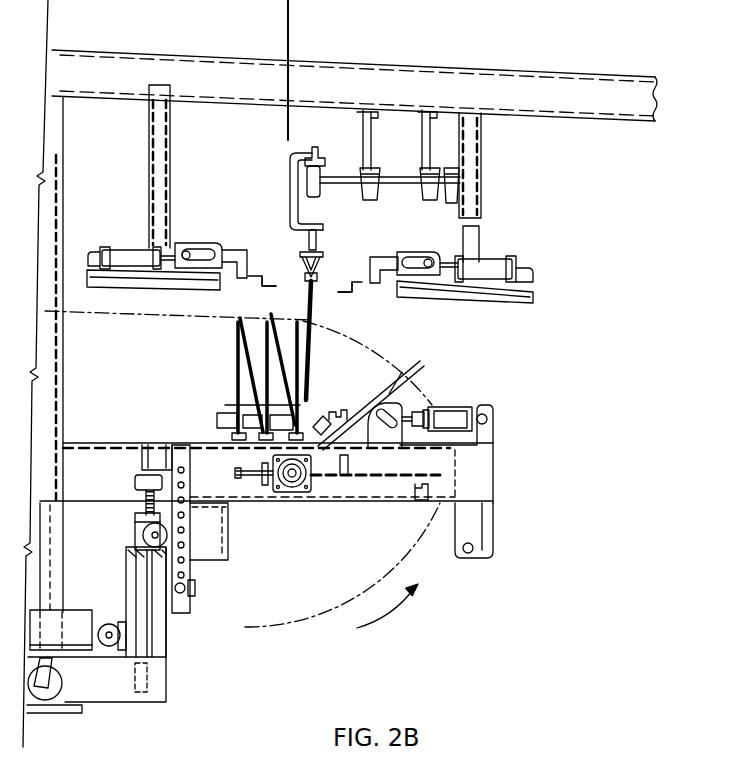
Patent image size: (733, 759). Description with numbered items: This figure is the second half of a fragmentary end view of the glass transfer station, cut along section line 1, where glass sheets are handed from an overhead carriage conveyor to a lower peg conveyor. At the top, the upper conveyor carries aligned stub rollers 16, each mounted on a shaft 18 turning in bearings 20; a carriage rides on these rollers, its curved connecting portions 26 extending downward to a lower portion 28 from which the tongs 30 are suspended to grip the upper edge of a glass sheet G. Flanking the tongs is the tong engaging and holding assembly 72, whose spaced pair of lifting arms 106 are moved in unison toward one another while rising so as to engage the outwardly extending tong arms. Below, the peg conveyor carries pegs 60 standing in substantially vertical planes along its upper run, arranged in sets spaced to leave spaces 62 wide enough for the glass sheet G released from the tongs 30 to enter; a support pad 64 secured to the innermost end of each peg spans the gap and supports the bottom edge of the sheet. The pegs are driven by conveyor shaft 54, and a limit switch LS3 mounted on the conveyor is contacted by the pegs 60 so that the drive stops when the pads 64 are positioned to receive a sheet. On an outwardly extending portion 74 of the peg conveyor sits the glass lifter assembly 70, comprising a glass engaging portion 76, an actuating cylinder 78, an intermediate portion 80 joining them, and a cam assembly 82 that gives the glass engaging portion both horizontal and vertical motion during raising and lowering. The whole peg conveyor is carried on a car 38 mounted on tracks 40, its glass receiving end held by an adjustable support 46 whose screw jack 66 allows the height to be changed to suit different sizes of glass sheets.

The section line 1 is at (278, 18).
The stub rollers 16 is at (320, 176).
The shaft 18 is at (387, 180).
The bearings 20 is at (453, 172).
The connecting portions 26 is at (290, 184).
The lower portion 28 is at (306, 234).
The tongs 30 is at (318, 256).
The tong engaging and holding assembly 72 is at (216, 238).
The lifting arms 106 is at (265, 283).
The glass sheet G is at (305, 322).
The spaces 62 is at (247, 320).
The pegs 60 is at (237, 362).
The support pad 64 is at (222, 420).
The glass lifter assembly 70 is at (390, 397).
The glass engaging portion 76 is at (346, 413).
The actuating cylinder 78 is at (470, 410).
The intermediate portion 80 is at (427, 415).
The cam assembly 82 is at (387, 435).
The outwardly extending portion 74 is at (488, 489).
The conveyor shaft 54 is at (307, 505).
The limit switch LS3 is at (420, 501).
The screw jack 66 is at (140, 496).
The adjustable support 46 is at (106, 596).
The car 38 is at (184, 678).
The tracks 40 is at (82, 710).